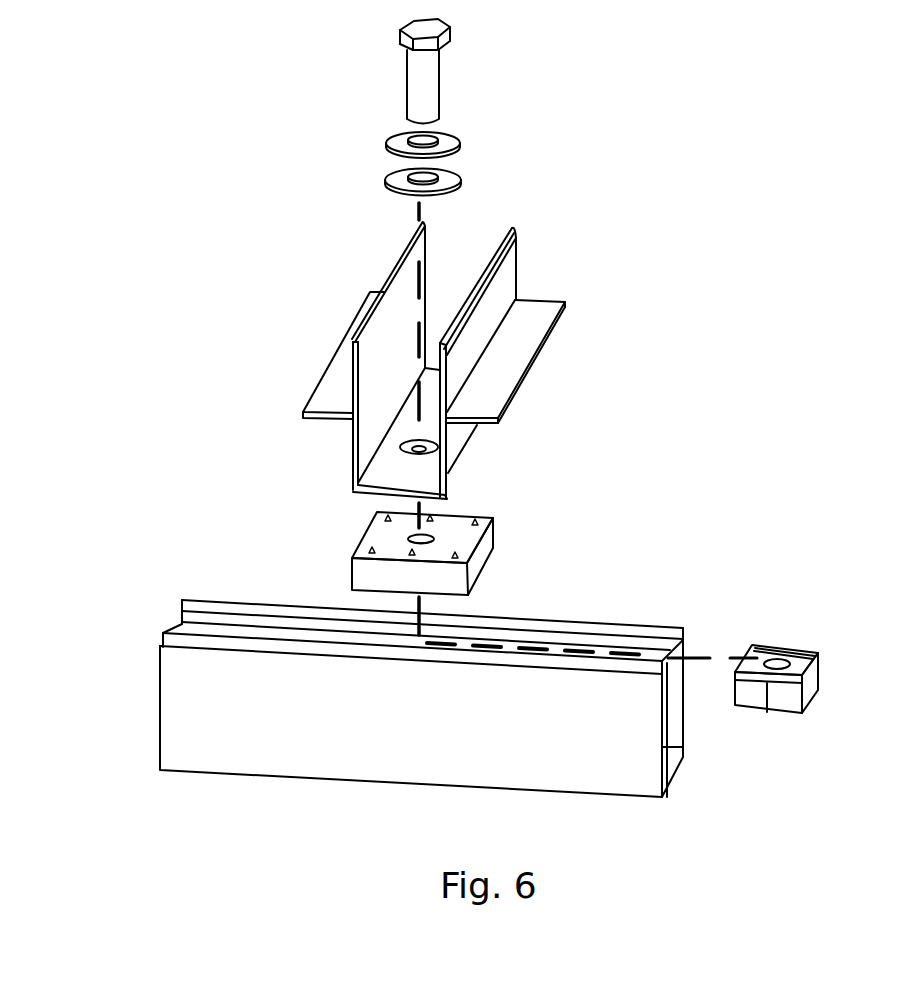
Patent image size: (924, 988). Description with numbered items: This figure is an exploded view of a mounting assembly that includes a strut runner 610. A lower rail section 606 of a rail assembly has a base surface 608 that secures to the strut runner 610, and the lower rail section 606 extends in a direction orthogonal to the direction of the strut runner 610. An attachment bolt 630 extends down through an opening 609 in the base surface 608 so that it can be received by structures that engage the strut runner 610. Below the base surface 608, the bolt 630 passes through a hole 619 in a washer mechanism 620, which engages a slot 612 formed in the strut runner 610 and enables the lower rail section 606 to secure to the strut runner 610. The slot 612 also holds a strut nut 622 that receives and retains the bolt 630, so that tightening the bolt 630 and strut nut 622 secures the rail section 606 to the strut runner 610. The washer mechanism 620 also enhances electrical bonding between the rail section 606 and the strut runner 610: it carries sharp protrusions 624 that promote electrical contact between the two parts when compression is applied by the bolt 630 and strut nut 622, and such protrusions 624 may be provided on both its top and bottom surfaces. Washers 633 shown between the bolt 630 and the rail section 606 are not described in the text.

The lower rail section 606 is at (535, 254).
The base surface 608 is at (387, 463).
The opening 609 is at (417, 453).
The strut runner 610 is at (146, 704).
The slot 612 is at (670, 646).
The hole 619 is at (430, 545).
The washer mechanism 620 is at (484, 515).
The strut nut 622 is at (780, 658).
The sharp protrusions 624 is at (458, 555).
The attachment bolt 630 is at (440, 84).
The washer 633 is at (461, 145).